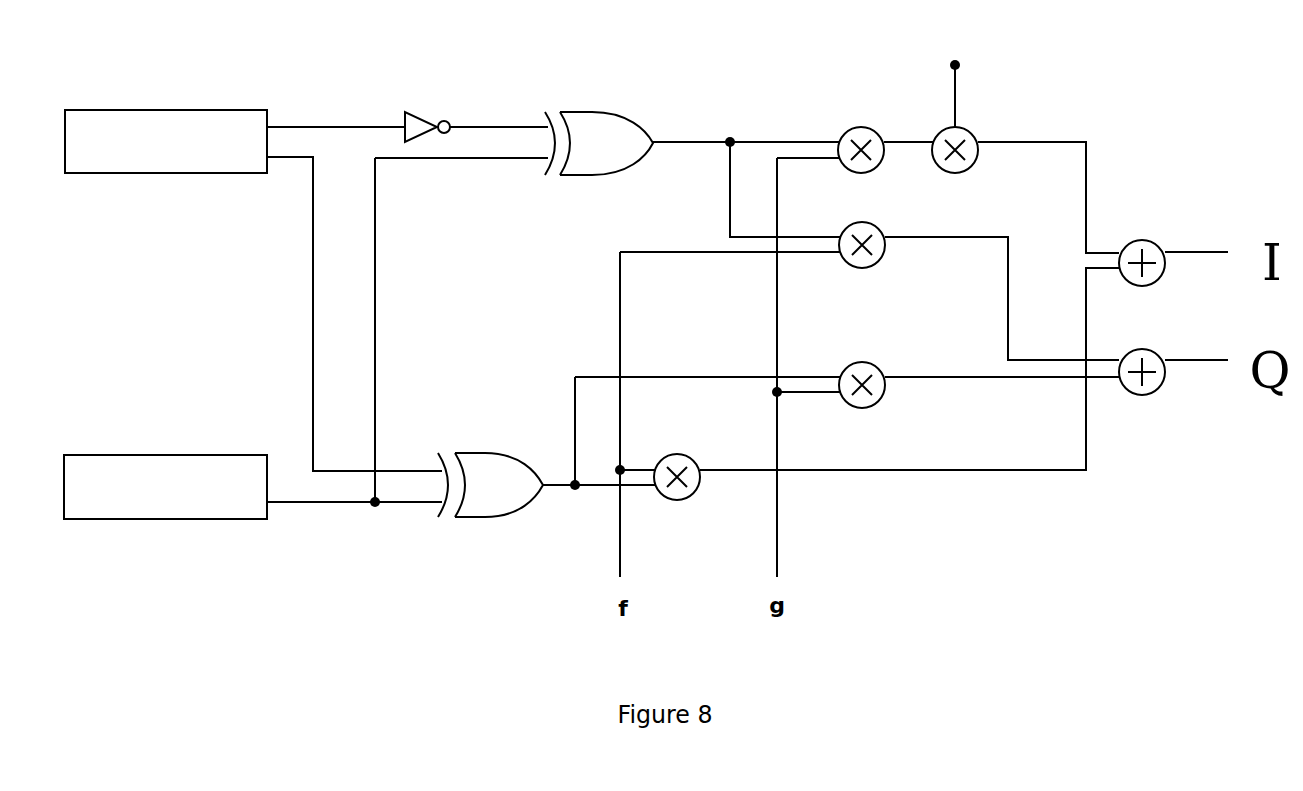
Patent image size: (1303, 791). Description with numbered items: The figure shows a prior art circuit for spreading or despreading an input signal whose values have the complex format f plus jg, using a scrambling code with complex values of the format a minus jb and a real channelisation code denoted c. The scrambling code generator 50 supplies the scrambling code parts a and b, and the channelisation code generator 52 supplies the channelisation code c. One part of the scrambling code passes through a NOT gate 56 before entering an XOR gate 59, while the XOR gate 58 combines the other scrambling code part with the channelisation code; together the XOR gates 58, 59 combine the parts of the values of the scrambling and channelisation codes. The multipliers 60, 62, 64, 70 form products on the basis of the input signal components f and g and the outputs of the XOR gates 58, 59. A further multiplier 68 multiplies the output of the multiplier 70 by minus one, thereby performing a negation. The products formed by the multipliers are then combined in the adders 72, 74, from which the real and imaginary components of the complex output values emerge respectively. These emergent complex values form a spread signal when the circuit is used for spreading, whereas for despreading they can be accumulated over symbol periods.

The scrambling code generator 50 is at (192, 110).
The channelisation code generator 52 is at (143, 519).
The NOT gate 56 is at (420, 110).
The XOR gate 58 is at (483, 517).
The XOR gate 59 is at (590, 112).
The multiplier 60 is at (668, 500).
The multiplier 62 is at (853, 408).
The multiplier 64 is at (853, 268).
The multiplier 68 is at (962, 172).
The multiplier 70 is at (855, 127).
The adder 72 is at (1147, 240).
The adder 74 is at (1148, 395).